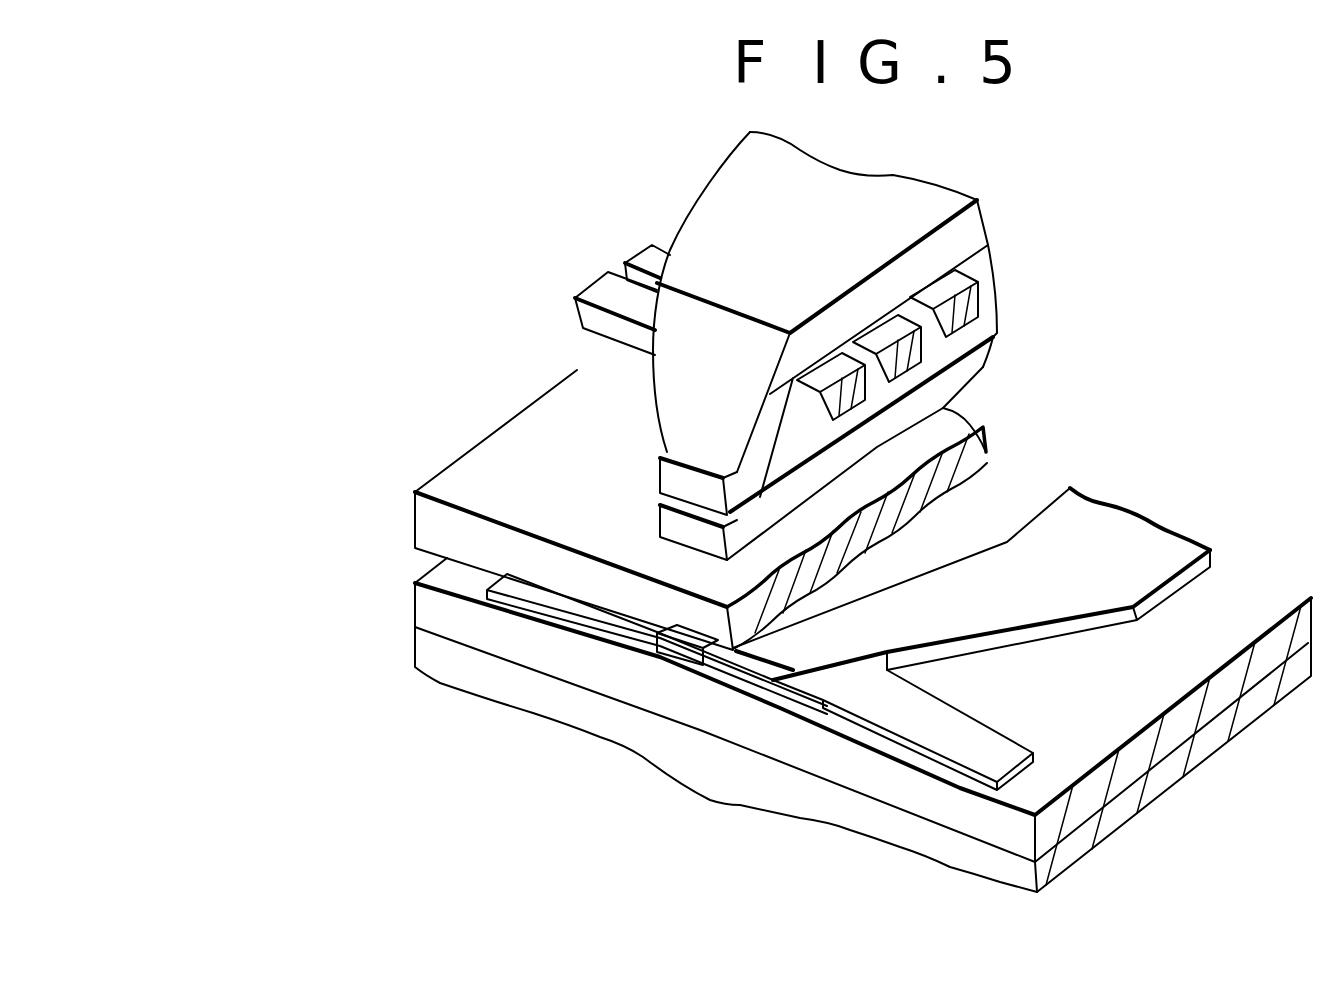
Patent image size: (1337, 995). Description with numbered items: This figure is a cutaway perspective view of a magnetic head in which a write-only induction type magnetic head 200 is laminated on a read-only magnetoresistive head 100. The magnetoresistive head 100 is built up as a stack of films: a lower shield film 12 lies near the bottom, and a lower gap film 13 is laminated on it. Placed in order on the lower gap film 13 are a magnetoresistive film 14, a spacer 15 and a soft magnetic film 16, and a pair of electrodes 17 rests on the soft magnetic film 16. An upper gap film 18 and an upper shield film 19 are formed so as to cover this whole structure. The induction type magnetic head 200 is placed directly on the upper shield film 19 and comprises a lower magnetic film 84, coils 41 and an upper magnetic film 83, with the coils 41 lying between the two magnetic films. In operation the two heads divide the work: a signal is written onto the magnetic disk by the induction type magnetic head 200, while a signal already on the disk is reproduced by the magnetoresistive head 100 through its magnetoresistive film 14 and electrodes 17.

The magnetoresistive head 100 is at (315, 500).
The lower shield film 12 is at (430, 655).
The lower gap film 13 is at (430, 607).
The magnetoresistive film 14 is at (985, 743).
The spacer 15 is at (971, 639).
The soft magnetic film 16 is at (971, 639).
The electrodes 17 is at (795, 700).
The upper gap film 18 is at (430, 527).
The upper shield film 19 is at (701, 510).
The induction type magnetic head 200 is at (1118, 215).
The upper magnetic film 83 is at (972, 230).
The lower magnetic film 84 is at (988, 348).
The coils 41 is at (977, 300).